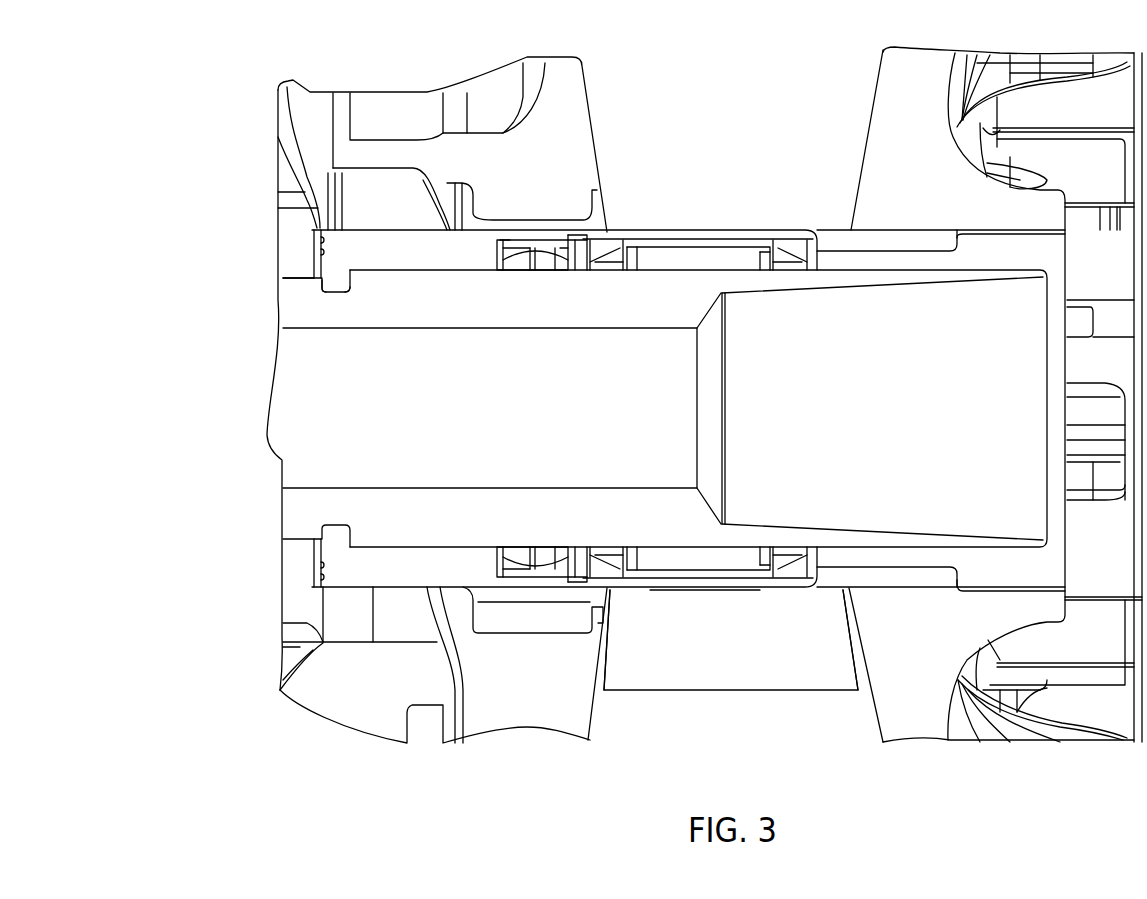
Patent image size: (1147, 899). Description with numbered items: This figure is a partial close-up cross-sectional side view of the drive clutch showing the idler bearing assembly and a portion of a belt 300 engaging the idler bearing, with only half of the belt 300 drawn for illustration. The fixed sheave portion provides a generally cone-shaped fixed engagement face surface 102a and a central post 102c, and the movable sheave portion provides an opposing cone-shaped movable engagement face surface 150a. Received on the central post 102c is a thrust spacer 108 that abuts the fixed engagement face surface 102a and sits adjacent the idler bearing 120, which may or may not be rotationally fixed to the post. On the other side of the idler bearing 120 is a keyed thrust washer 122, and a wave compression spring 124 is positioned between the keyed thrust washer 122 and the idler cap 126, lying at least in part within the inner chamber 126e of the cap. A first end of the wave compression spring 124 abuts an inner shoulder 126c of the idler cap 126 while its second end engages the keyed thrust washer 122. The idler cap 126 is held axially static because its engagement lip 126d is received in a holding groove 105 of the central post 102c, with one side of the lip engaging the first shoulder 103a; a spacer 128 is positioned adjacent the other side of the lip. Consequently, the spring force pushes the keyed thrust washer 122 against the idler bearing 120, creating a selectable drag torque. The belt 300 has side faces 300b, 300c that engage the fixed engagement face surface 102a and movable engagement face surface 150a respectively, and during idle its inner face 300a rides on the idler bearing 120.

The fixed engagement face surface 102a is at (879, 83).
The central post 102c is at (292, 513).
The first shoulder 103a is at (322, 278).
The holding groove 105 is at (340, 292).
The thrust spacer 108 is at (833, 237).
The idler bearing 120 is at (725, 232).
The keyed thrust washer 122 is at (577, 582).
The wave compression spring 124 is at (530, 580).
The idler cap 126 is at (337, 580).
The inner shoulder 126c is at (503, 243).
The engagement lip 126d is at (323, 284).
The inner chamber 126e is at (563, 253).
The spacer 128 is at (320, 263).
The movable engagement face surface 150a is at (583, 63).
The belt 300 is at (800, 680).
The inner face 300a is at (700, 592).
The side face 300b is at (855, 653).
The side face 300c is at (607, 592).